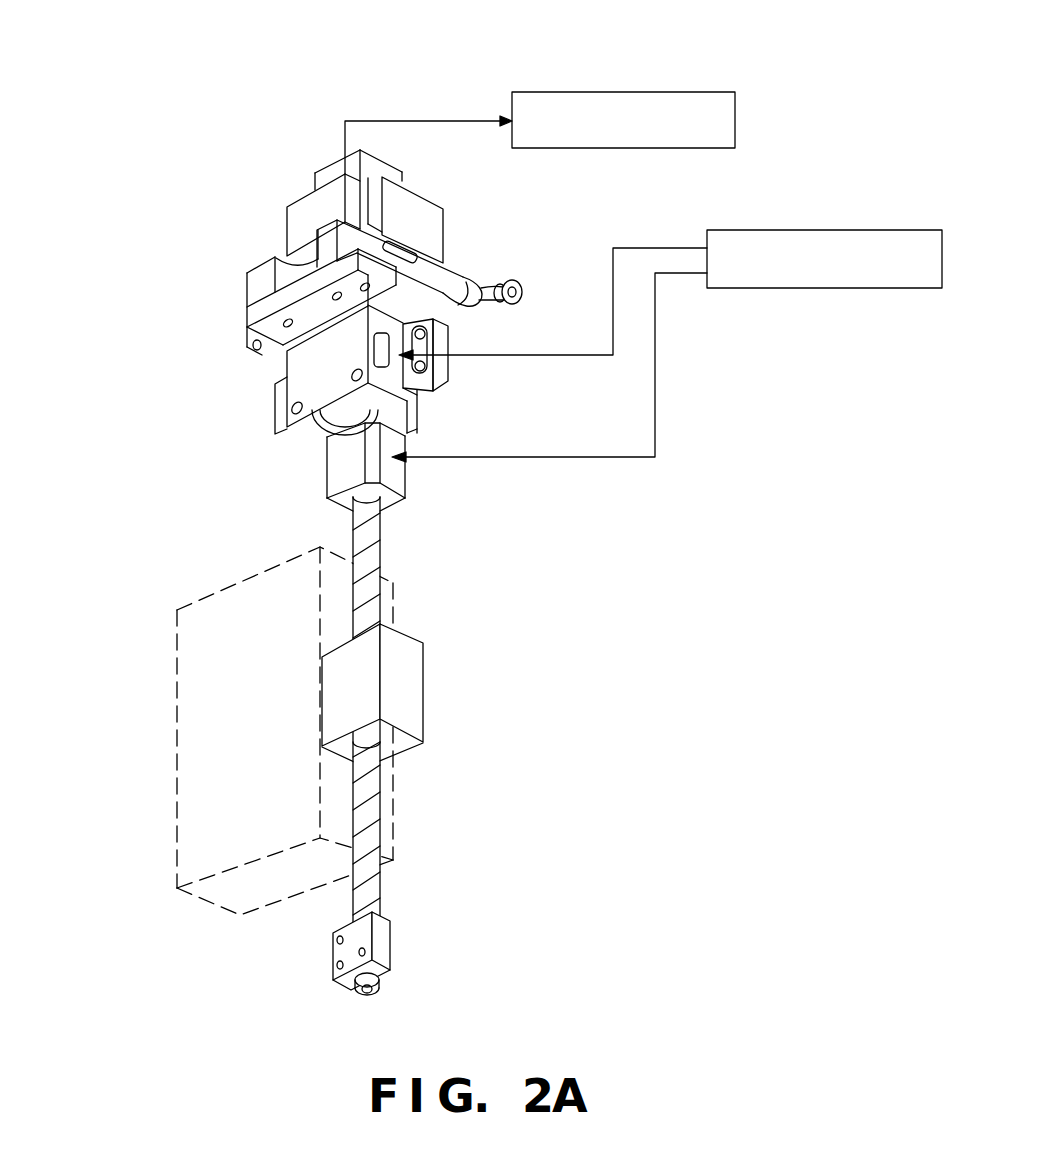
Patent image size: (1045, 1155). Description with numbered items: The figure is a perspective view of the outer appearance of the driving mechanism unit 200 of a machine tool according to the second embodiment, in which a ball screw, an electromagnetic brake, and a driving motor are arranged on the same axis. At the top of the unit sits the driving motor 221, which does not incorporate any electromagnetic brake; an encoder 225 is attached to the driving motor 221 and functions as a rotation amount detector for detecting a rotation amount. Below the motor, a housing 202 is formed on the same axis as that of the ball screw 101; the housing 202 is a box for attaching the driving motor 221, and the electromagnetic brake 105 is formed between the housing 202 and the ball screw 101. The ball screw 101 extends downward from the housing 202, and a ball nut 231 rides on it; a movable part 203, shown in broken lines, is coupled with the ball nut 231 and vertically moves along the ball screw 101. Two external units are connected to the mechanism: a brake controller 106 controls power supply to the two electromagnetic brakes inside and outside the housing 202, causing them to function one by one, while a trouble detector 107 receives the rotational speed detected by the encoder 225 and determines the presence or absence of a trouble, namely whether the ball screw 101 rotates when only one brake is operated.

The driving mechanism unit 200 is at (112, 92).
The trouble detector 107 is at (701, 92).
The brake controller 106 is at (803, 230).
The encoder 225 is at (313, 176).
The driving motor 221 is at (317, 222).
The housing 202 is at (307, 374).
The electromagnetic brake 105 is at (343, 474).
The ball screw 101 is at (350, 531).
The movable part 203 is at (215, 634).
The ball nut 231 is at (387, 746).